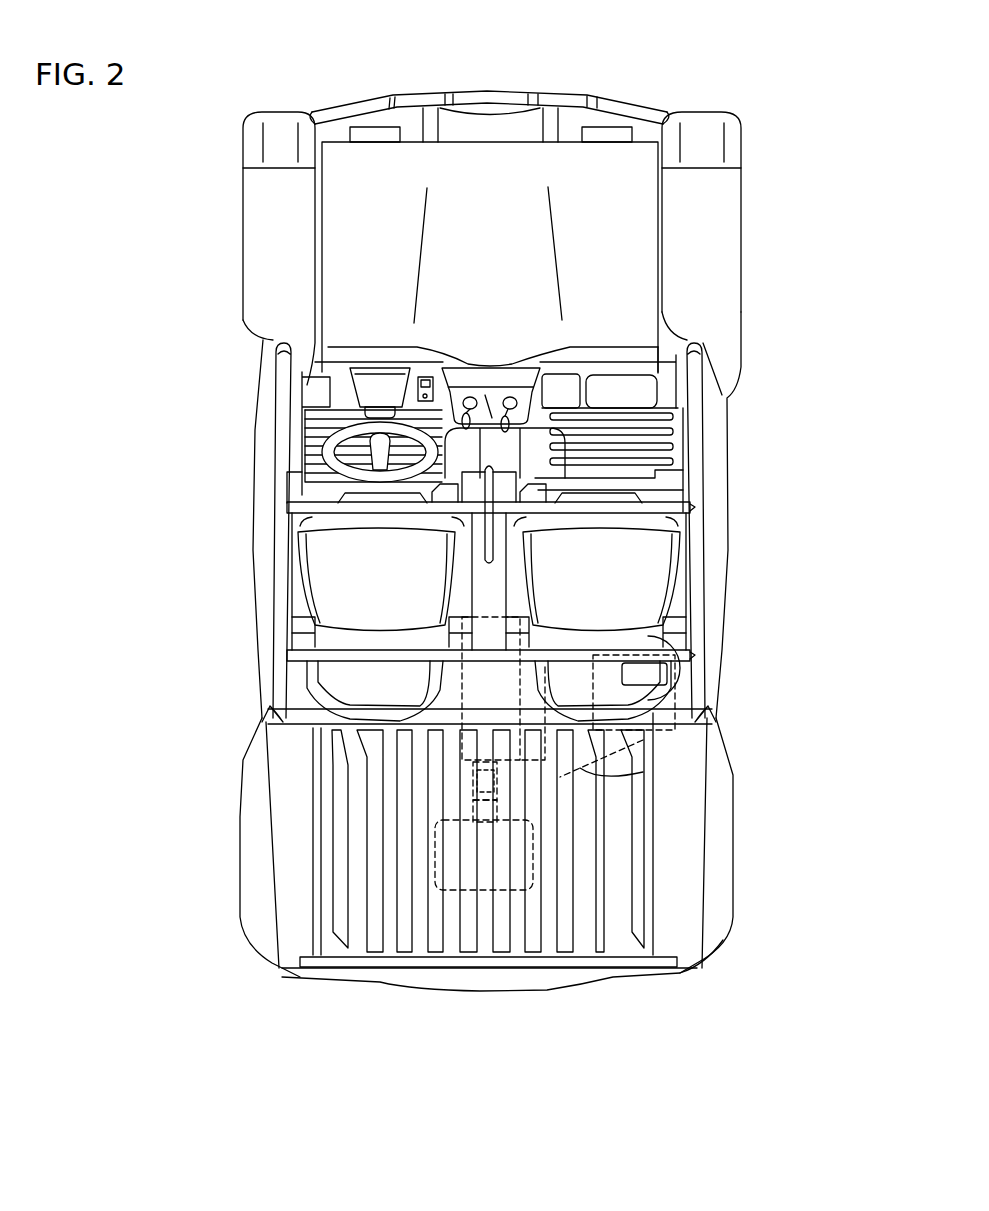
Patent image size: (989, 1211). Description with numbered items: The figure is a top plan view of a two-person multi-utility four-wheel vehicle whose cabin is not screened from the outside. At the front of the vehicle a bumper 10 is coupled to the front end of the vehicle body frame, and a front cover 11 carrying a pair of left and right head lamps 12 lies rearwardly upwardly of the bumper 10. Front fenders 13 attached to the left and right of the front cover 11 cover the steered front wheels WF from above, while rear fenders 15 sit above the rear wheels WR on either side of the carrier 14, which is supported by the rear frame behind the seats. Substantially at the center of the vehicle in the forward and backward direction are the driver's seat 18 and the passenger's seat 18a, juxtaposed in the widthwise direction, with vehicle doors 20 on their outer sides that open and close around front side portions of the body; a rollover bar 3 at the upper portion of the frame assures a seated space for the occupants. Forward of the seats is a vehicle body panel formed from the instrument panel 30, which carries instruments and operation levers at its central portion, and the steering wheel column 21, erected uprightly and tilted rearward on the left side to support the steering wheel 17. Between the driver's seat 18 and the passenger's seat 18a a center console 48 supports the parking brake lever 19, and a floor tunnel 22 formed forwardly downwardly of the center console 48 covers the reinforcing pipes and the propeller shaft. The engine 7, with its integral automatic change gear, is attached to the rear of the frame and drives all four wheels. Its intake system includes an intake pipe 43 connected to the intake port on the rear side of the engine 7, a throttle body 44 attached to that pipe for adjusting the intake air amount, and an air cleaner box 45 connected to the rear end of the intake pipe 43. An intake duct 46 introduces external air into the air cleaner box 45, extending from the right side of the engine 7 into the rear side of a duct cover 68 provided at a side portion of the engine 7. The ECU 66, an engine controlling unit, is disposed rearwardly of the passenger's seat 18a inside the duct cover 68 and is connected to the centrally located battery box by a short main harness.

The rollover bar 3 is at (692, 568).
The engine 7 is at (283, 712).
The bumper 10 is at (483, 100).
The front cover 11 is at (515, 195).
The head lamps 12 is at (373, 130).
The front fenders 13 is at (262, 256).
The carrier 14 is at (655, 790).
The rear fenders 15 is at (255, 812).
The steering wheel 17 is at (330, 445).
The driver's seat 18 is at (340, 597).
The passenger's seat 18a is at (640, 600).
The parking brake lever 19 is at (485, 533).
The vehicle doors 20 is at (263, 497).
The steering wheel column 21 is at (375, 387).
The floor tunnel 22 is at (500, 455).
The instrument panel 30 is at (582, 427).
The intake pipe 43 is at (500, 803).
The throttle body 44 is at (470, 782).
The air cleaner box 45 is at (482, 890).
The intake duct 46 is at (570, 838).
The center console 48 is at (470, 617).
The ECU 66 is at (665, 702).
The duct cover 68 is at (668, 640).
The front wheels WF is at (252, 152).
The rear wheels WR is at (243, 930).